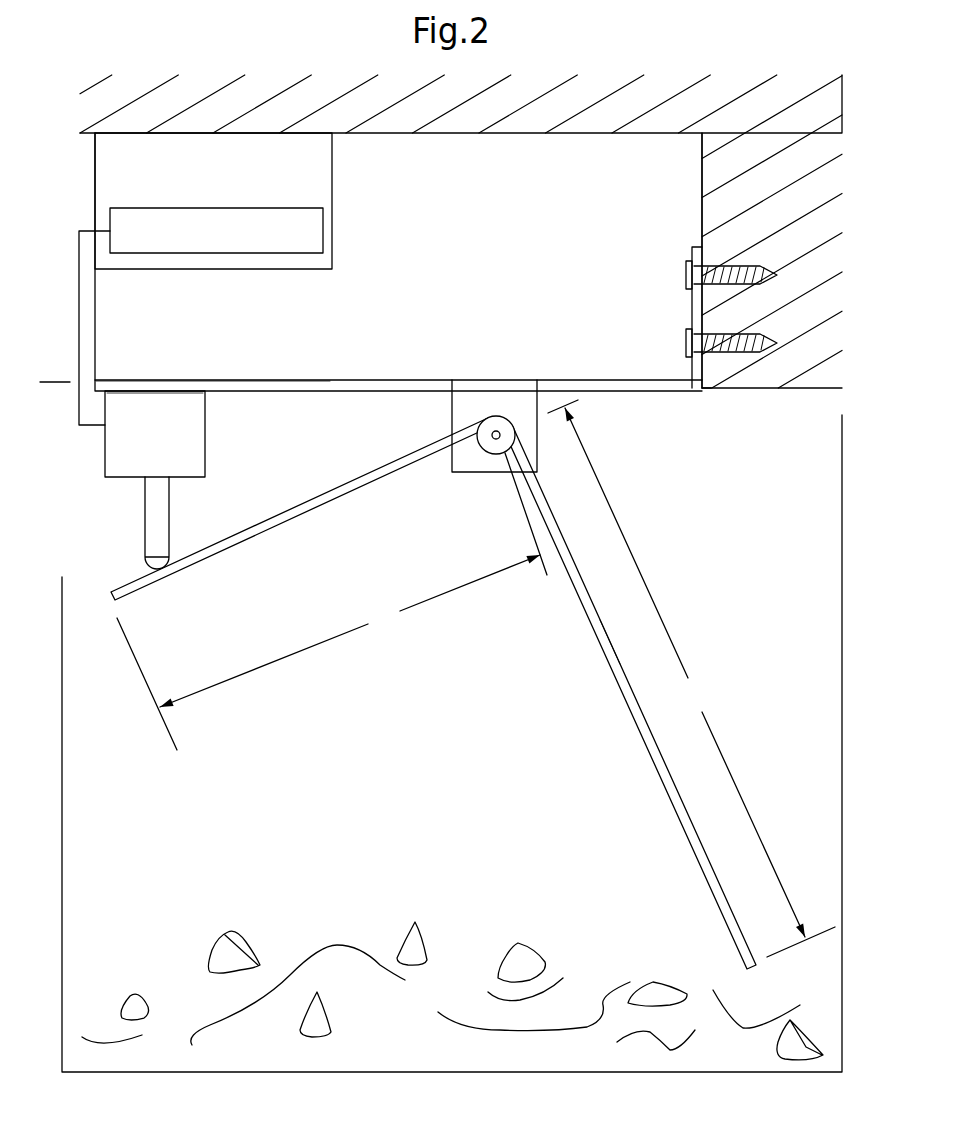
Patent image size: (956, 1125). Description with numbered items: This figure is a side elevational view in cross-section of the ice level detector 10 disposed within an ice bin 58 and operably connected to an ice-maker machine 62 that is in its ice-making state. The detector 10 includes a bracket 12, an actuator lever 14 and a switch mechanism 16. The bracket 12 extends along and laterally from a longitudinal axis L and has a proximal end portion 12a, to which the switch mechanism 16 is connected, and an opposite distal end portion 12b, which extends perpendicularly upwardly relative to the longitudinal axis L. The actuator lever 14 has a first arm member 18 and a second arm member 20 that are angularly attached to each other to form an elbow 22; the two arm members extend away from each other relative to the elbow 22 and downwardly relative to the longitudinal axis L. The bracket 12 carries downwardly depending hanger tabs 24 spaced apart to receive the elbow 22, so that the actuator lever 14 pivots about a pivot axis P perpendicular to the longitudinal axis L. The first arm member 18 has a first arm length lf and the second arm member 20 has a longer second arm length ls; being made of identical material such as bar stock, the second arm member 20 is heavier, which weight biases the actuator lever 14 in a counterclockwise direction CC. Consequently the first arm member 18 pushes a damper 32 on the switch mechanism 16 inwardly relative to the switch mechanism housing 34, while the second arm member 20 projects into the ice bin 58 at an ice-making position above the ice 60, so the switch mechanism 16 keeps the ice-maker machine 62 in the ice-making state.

The ice level detector 10 is at (495, 345).
The bracket 12 is at (377, 380).
The proximal end portion 12a is at (237, 380).
The distal end portion 12b is at (690, 373).
The actuator lever 14 is at (597, 612).
The switch mechanism 16 is at (210, 452).
The first arm member 18 is at (297, 517).
The second arm member 20 is at (637, 722).
The elbow 22 is at (502, 448).
The hanger tabs 24 is at (532, 440).
The damper 32 is at (153, 498).
The switch mechanism housing 34 is at (118, 462).
The ice bin 58 is at (843, 545).
The ice 60 is at (512, 943).
The ice-maker machine 62 is at (325, 223).
The pivot axis P is at (497, 432).
The longitudinal axis L is at (57, 382).
The counterclockwise direction CC is at (617, 952).
The first arm length lf is at (332, 601).
The second arm length ls is at (691, 678).